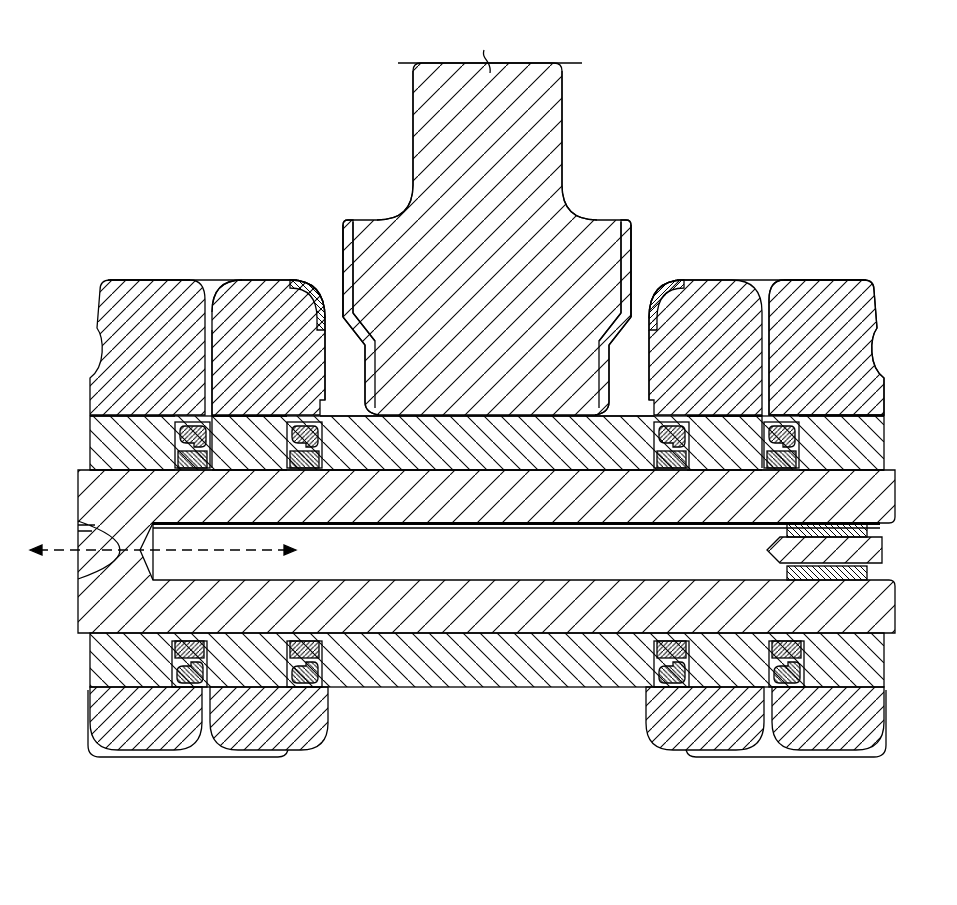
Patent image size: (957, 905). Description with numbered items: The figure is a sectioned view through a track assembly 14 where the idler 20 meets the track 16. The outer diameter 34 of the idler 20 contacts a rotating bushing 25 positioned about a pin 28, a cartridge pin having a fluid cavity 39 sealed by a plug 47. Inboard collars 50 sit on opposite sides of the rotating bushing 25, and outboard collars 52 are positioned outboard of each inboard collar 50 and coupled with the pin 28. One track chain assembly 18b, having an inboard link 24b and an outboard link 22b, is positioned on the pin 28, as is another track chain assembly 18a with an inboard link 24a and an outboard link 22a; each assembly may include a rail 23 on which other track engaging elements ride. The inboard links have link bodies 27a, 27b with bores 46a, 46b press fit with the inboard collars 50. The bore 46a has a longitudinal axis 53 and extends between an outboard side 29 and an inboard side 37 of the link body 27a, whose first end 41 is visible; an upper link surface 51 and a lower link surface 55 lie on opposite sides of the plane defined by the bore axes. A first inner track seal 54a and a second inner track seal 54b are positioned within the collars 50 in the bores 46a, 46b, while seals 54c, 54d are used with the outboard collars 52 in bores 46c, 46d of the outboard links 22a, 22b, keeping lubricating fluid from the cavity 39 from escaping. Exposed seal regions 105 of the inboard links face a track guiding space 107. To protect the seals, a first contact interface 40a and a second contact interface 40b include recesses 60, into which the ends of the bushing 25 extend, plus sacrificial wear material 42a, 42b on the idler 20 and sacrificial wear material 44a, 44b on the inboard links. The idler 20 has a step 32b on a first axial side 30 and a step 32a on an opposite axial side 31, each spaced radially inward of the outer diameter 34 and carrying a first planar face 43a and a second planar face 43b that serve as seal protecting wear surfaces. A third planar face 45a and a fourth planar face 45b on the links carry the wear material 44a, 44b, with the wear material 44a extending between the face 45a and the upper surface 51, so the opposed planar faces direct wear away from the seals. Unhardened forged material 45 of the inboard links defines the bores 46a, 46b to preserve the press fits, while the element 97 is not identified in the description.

The track assembly 14 is at (812, 103).
The track 16 is at (880, 308).
The track chain assembly 18a is at (186, 354).
The track chain assembly 18b is at (793, 354).
The idler 20 is at (564, 90).
The outboard link 22a is at (118, 330).
The outboard link 22b is at (862, 330).
The rail 23 is at (170, 277).
The inboard link 24a is at (218, 288).
The inboard link 24b is at (745, 285).
The rotating bushing 25 is at (489, 686).
The link body 27a is at (316, 750).
The link body 27b is at (655, 745).
The pin 28 is at (898, 504).
The outboard side 29 is at (197, 710).
The first axial side 30 is at (568, 123).
The opposite axial side 31 is at (407, 123).
The step 32a is at (384, 226).
The step 32b is at (600, 250).
The outer diameter 34 is at (464, 421).
The inboard side 37 is at (238, 745).
The fluid cavity 39 is at (486, 553).
The first contact interface 40a is at (330, 292).
The second contact interface 40b is at (645, 292).
The first end 41 is at (222, 382).
The sacrificial wear material 42a is at (343, 222).
The sacrificial wear material 42b is at (632, 222).
The first planar face 43a is at (338, 242).
The second planar face 43b is at (635, 242).
The sacrificial wear material 44a is at (330, 305).
The sacrificial wear material 44b is at (655, 300).
The forged material 45 is at (243, 292).
The third planar face 45a is at (334, 322).
The fourth planar face 45b is at (638, 322).
The bore 46a is at (247, 418).
The bore 46b is at (727, 418).
The bore 46c is at (120, 428).
The bore 46d is at (862, 432).
The plug 47 is at (870, 530).
The inboard collars 50 is at (250, 463).
The upper link surface 51 is at (244, 283).
The outboard collars 52 is at (882, 432).
The longitudinal axis 53 is at (57, 553).
The first inner track seal 54a is at (305, 463).
The second inner track seal 54b is at (665, 463).
The seal 54c is at (190, 463).
The seal 54d is at (785, 463).
The lower link surface 55 is at (257, 753).
The recesses 60 is at (325, 409).
The second side surface 97 is at (565, 140).
The exposed seal regions 105 is at (334, 393).
The track guiding space 107 is at (343, 357).